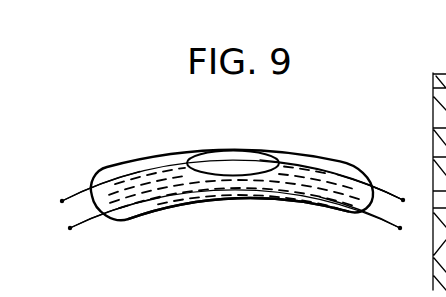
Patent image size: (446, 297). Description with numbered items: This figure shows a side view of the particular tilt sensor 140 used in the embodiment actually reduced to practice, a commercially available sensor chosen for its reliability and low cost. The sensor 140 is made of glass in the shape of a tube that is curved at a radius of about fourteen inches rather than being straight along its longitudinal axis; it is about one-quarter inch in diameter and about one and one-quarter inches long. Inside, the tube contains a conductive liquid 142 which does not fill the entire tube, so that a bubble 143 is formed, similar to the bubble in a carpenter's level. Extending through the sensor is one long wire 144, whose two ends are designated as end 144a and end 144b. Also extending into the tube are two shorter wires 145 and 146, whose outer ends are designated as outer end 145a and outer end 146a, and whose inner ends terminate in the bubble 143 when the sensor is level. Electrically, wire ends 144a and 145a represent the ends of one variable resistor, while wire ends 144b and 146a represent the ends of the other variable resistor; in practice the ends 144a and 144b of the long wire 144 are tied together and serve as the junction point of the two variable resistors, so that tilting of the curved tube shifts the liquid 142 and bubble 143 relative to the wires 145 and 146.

The tilt sensor 140 is at (314, 137).
The conductive liquid 142 is at (175, 187).
The bubble 143 is at (229, 160).
The long wire 144 is at (246, 192).
The end of long wire 144a is at (70, 229).
The end of long wire 144b is at (400, 229).
The wire 145 is at (139, 173).
The outer end of wire 145a is at (62, 201).
The wire 146 is at (337, 173).
The outer end of wire 146a is at (403, 200).